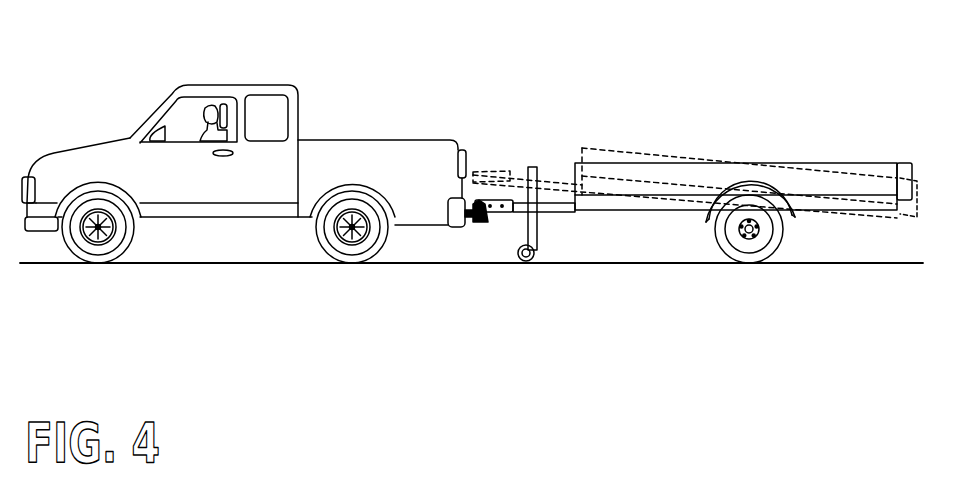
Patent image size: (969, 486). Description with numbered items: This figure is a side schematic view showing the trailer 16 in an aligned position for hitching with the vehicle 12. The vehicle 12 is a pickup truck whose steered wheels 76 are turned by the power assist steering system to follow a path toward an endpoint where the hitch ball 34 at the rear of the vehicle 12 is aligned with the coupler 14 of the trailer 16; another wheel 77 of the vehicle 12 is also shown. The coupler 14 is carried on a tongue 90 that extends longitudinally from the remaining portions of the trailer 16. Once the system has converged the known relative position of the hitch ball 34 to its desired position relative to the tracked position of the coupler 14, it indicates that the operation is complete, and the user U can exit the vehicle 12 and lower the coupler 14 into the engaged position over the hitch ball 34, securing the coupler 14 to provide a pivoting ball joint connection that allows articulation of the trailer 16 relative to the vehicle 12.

The vehicle 12 is at (323, 68).
The coupler 14 is at (481, 204).
The trailer 16 is at (733, 125).
The hitch ball 34 is at (478, 228).
The steered wheels 76 is at (94, 253).
The rear wheel of tow vehicle 77 is at (353, 253).
The tongue 90 is at (538, 205).
The user / driver U is at (207, 102).